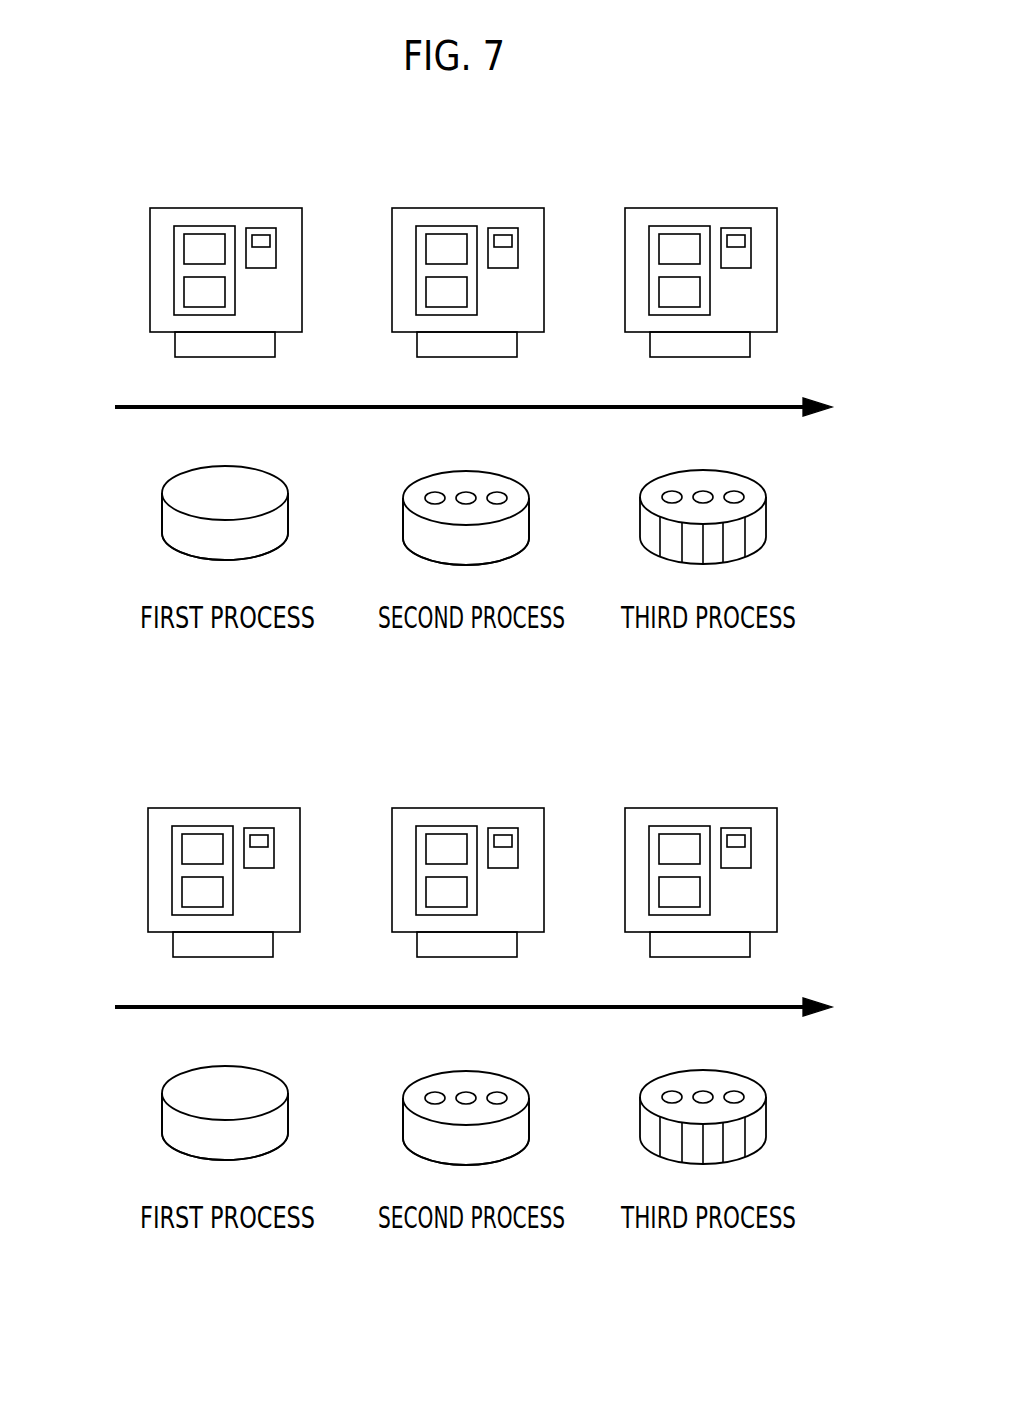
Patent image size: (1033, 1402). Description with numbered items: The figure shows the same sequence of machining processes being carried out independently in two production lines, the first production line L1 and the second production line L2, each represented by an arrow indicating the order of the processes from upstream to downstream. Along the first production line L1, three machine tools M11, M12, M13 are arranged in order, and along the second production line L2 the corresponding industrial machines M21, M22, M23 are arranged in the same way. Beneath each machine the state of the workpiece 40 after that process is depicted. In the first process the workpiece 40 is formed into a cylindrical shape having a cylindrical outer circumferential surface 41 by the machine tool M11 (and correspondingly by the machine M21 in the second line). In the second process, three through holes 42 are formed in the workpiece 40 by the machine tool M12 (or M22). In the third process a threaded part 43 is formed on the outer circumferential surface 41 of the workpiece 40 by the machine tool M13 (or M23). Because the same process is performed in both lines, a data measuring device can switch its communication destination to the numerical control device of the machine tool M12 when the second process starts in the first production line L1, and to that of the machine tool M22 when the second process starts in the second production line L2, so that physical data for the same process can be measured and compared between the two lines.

The first production line L1 is at (128, 405).
The second production line L2 is at (130, 1005).
The machine tool M11 is at (278, 208).
The machine tool M12 is at (517, 208).
The machine tool M13 is at (754, 208).
The industrial machine M21 is at (278, 808).
The machine tool M22 is at (517, 808).
The industrial machine M23 is at (752, 808).
The workpiece 40 is at (263, 482).
The cylindrical outer circumferential surface 41 is at (282, 528).
The through holes 42 is at (469, 492).
The threaded part 43 is at (748, 545).